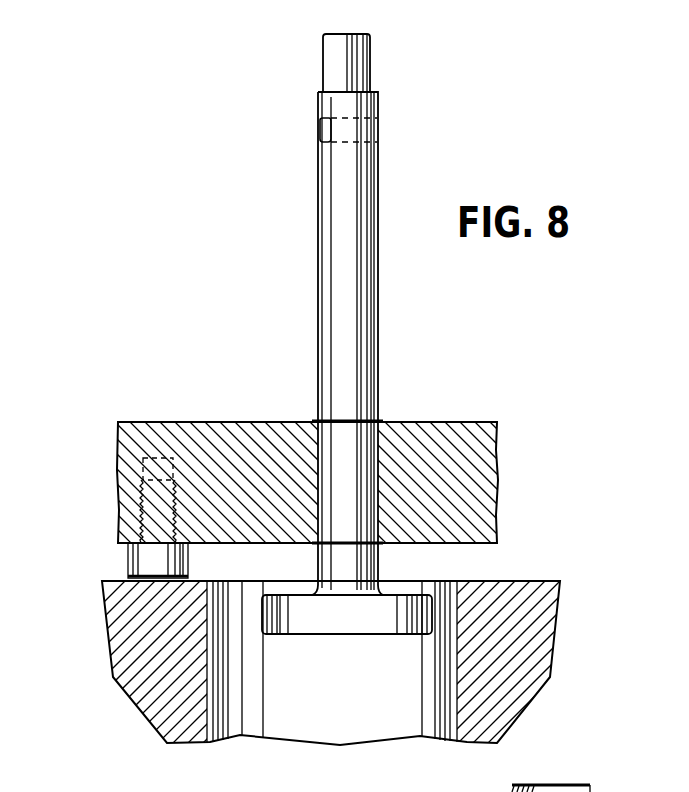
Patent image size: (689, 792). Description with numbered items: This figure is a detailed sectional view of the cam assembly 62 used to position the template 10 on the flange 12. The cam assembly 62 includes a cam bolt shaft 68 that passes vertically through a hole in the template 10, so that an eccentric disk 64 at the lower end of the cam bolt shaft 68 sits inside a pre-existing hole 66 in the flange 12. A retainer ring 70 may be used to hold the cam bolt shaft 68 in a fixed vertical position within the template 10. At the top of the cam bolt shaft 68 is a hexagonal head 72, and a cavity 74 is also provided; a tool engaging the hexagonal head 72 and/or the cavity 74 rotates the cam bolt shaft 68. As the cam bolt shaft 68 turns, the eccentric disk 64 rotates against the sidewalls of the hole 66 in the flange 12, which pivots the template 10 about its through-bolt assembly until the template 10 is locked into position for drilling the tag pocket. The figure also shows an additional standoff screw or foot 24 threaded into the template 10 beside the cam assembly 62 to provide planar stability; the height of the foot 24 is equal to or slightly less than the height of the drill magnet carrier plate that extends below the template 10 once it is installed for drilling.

The template 10 is at (468, 425).
The flange 12 is at (518, 583).
The standoff screw or foot 24 is at (128, 563).
The cam assembly 62 is at (410, 173).
The eccentric disk 64 is at (427, 613).
The pre-existing hole 66 is at (210, 643).
The cam bolt shaft 68 is at (367, 278).
The retainer ring 70 is at (312, 420).
The hexagonal head 72 is at (367, 63).
The cavity 74 is at (320, 126).